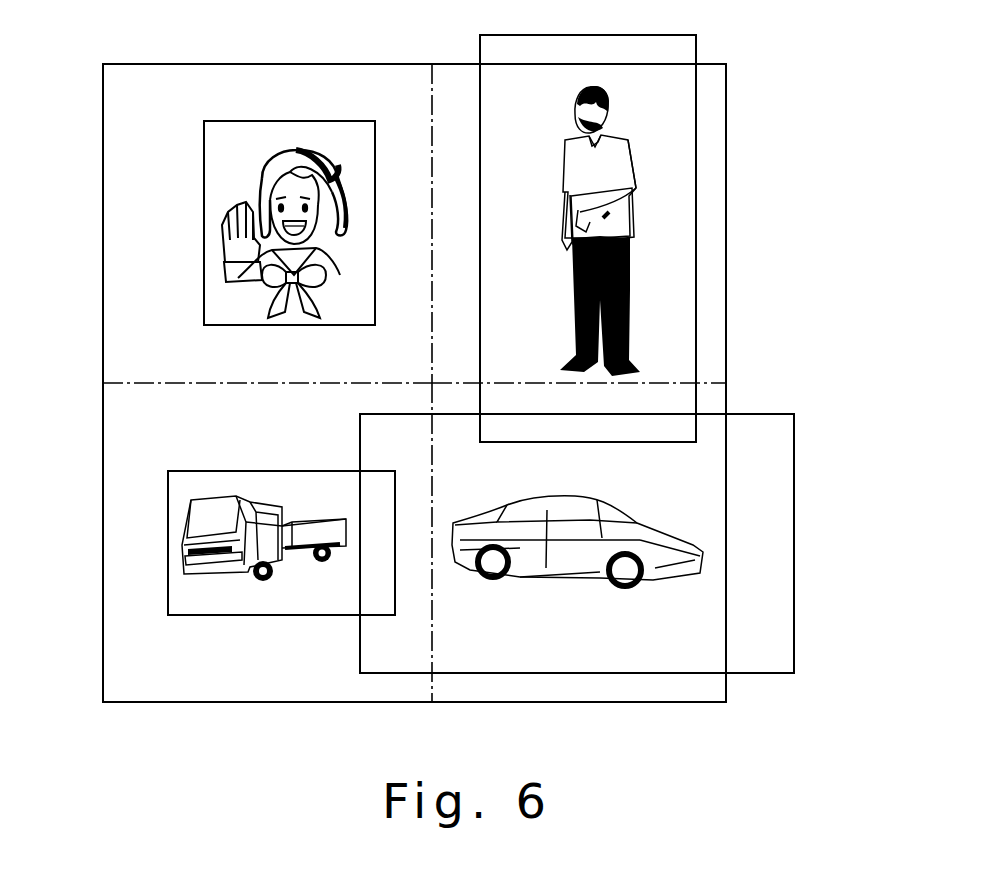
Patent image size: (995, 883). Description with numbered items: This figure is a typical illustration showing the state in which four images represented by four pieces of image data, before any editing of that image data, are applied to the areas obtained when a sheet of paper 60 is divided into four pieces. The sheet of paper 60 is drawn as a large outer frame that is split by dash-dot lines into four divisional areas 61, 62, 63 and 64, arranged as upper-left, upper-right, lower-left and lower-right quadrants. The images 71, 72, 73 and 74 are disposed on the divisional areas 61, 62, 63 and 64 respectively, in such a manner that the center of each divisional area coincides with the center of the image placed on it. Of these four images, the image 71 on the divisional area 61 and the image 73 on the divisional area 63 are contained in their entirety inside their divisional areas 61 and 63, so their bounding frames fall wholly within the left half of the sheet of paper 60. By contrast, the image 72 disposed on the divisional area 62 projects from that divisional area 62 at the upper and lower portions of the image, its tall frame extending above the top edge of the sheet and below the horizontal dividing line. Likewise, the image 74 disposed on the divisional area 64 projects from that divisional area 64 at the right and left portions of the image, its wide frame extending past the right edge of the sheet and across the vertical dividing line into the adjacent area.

The sheet of paper 60 is at (727, 135).
The divisional area 61 is at (133, 101).
The divisional area 62 is at (717, 88).
The divisional area 63 is at (133, 424).
The divisional area 64 is at (710, 394).
The image 71 is at (204, 194).
The image 72 is at (696, 190).
The image 73 is at (166, 560).
The image 74 is at (795, 488).